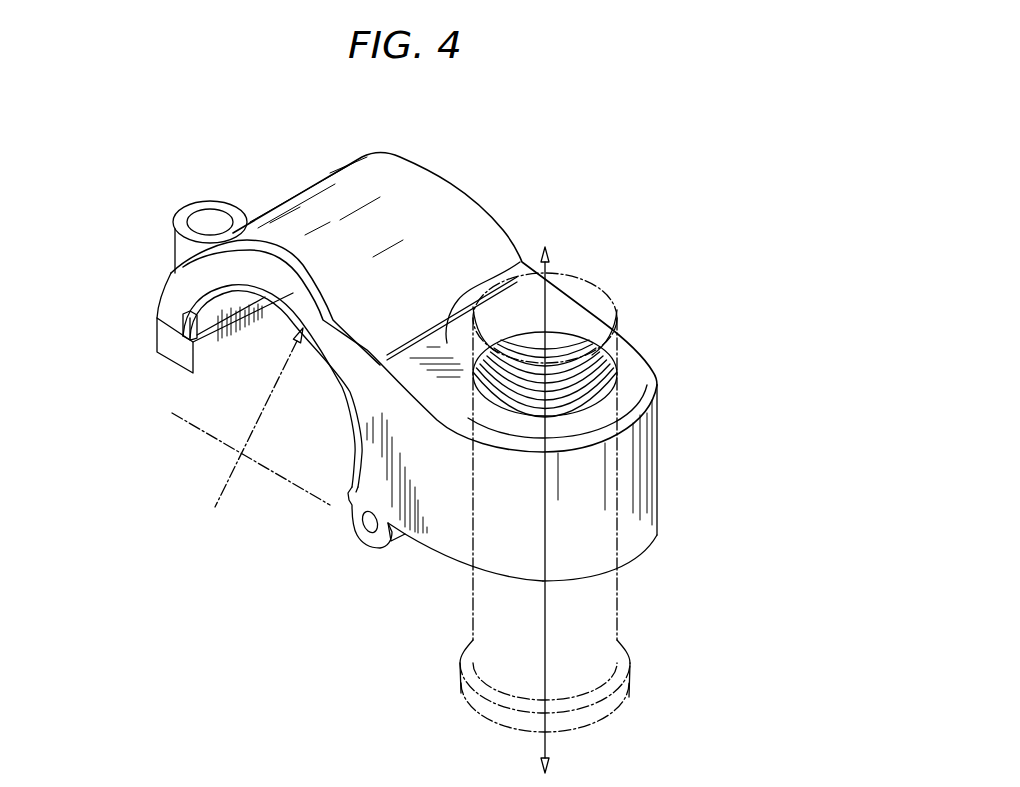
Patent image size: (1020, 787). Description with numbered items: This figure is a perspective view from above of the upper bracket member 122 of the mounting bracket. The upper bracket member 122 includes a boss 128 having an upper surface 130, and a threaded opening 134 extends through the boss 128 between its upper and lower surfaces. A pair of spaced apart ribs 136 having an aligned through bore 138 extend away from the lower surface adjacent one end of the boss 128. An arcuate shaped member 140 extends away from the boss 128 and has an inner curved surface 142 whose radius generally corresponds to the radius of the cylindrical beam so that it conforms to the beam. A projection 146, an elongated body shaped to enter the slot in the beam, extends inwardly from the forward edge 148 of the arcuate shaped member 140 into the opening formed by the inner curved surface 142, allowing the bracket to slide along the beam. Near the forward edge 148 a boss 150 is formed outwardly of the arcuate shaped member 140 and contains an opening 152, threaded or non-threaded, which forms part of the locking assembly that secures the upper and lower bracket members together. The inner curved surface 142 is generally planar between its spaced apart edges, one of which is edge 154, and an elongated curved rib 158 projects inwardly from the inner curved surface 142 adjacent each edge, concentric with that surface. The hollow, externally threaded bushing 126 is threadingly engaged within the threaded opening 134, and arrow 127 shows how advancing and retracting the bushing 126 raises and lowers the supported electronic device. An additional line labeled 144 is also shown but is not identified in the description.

The upper bracket member 122 is at (470, 195).
The bushing 126 is at (603, 292).
The arrow 127 is at (545, 617).
The boss 128 is at (637, 530).
The upper surface 130 is at (517, 258).
The threaded opening 134 is at (587, 377).
The ribs 136 is at (390, 538).
The through bore 138 is at (366, 528).
The arcuate shaped member 140 is at (378, 168).
The inner curved surface 142 is at (222, 300).
The slot axis 144 is at (287, 372).
The projection 146 is at (210, 360).
The forward edge 148 is at (167, 362).
The boss 150 is at (177, 217).
The opening 152 is at (207, 222).
The edge 154 is at (172, 298).
The curved rib 158 is at (187, 318).